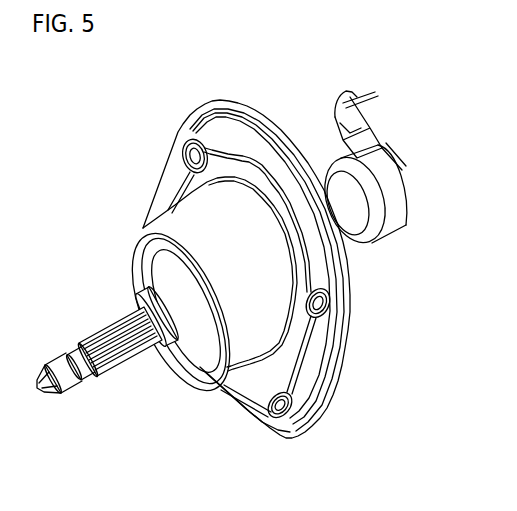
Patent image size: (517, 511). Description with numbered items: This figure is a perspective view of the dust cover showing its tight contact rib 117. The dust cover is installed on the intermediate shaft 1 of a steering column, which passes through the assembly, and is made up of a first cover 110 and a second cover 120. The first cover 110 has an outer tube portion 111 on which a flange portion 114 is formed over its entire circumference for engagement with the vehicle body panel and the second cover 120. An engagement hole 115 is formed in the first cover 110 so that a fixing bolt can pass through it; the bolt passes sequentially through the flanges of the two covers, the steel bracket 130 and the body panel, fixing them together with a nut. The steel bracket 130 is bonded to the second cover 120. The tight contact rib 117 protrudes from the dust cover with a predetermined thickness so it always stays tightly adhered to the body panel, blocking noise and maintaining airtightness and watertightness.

The intermediate shaft 1 is at (110, 372).
The first cover 110 is at (228, 193).
The outer tube portion 111 is at (168, 210).
The flange portion 114 is at (320, 347).
The engagement hole 115 is at (277, 413).
The tight contact rib 117 is at (208, 362).
The second cover 120 is at (320, 400).
The steel bracket 130 is at (347, 325).